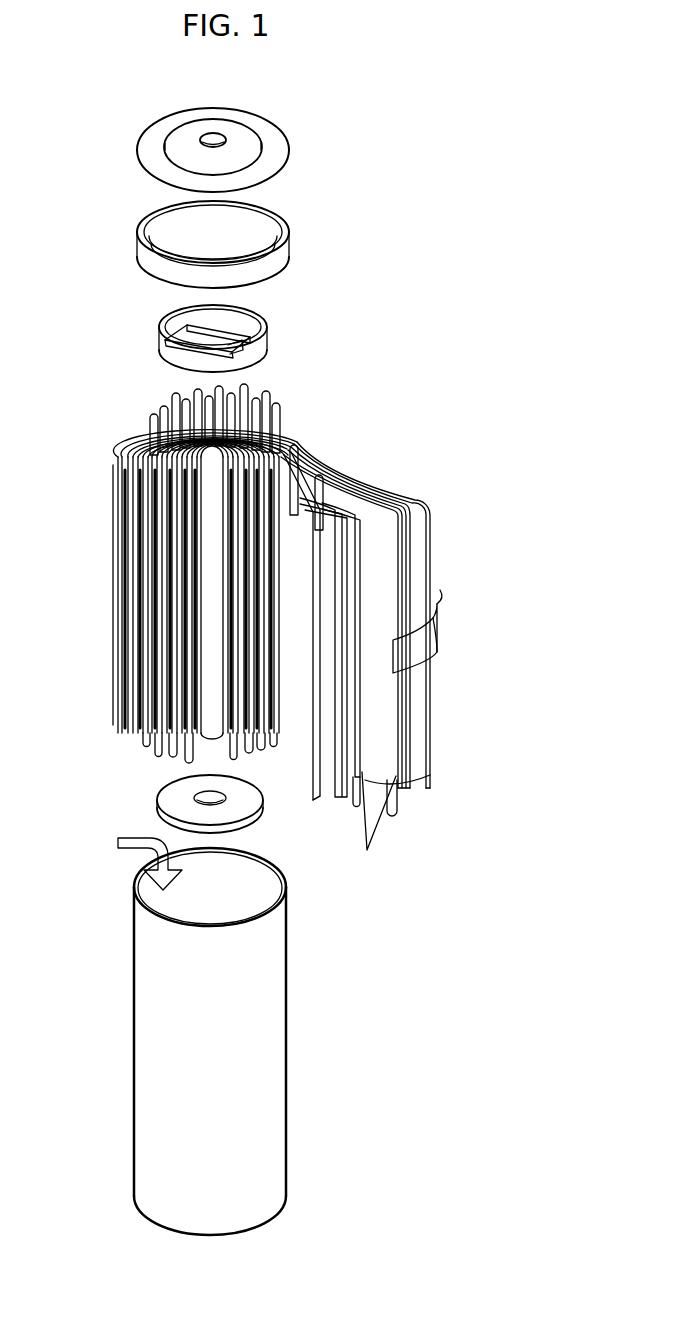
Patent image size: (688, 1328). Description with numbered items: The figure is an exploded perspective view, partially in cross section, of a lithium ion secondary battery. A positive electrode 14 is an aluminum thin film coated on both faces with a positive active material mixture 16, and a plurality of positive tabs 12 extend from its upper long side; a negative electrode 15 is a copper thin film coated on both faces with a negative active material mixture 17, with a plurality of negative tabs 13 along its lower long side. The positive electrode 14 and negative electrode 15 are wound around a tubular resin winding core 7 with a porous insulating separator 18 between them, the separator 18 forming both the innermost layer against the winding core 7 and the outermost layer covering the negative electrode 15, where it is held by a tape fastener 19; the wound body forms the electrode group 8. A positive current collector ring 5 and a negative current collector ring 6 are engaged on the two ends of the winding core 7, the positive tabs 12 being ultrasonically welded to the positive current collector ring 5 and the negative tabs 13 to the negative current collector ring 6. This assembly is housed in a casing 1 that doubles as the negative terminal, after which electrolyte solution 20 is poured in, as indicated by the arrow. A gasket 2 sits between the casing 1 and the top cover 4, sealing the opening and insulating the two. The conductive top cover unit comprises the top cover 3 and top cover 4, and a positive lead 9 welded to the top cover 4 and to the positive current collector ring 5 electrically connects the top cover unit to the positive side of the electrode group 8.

The casing 1 is at (281, 1043).
The gasket 2 is at (287, 258).
The top cover 3 is at (244, 130).
The top cover 4 is at (287, 146).
The positive current collector ring 5 is at (266, 346).
The negative current collector ring 6 is at (248, 812).
The winding core 7 is at (205, 737).
The electrode group 8 is at (118, 460).
The positive lead 9 is at (222, 343).
The positive tabs 12 is at (190, 412).
The negative tabs 13 is at (165, 757).
The positive electrode 14 is at (330, 537).
The negative electrode 15 is at (385, 800).
The positive active material mixture 16 is at (343, 568).
The negative active material mixture 17 is at (412, 715).
The separator 18 is at (320, 480).
The tape fastener 19 is at (408, 655).
The electrolyte solution 20 is at (128, 836).